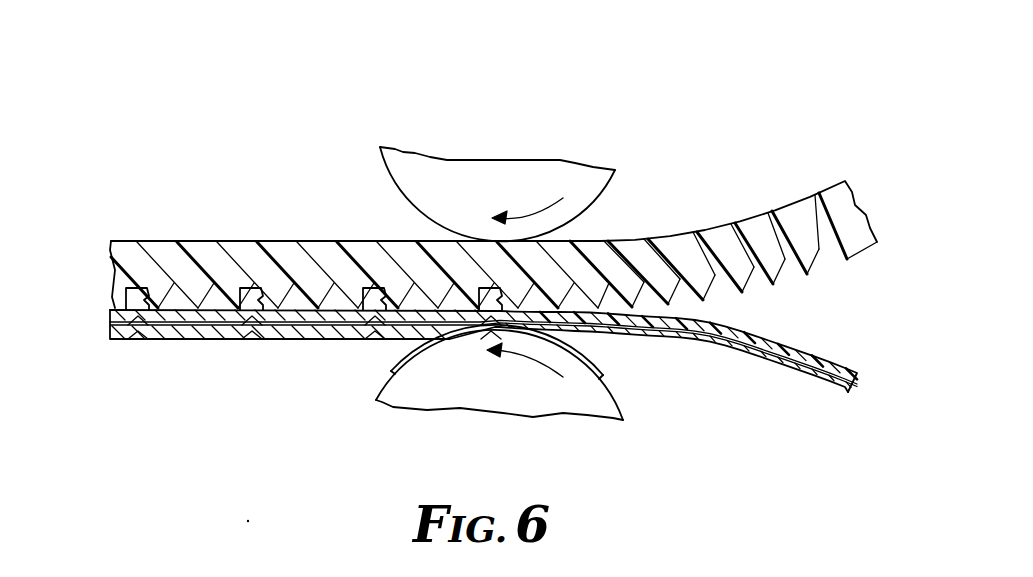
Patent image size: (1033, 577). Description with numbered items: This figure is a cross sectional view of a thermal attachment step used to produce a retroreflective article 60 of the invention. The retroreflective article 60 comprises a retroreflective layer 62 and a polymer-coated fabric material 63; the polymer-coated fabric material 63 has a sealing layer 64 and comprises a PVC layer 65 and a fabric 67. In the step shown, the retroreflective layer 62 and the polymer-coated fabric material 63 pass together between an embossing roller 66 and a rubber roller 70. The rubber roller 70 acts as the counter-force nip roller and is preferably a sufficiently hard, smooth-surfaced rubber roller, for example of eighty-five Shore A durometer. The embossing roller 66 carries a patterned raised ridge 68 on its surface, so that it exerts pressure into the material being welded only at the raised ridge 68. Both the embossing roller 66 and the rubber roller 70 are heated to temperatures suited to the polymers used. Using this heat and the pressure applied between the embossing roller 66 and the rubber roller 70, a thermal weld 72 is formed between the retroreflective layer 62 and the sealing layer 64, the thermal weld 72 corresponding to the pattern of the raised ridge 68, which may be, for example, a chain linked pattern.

The retroreflective article 60 is at (248, 236).
The retroreflective layer 62 is at (807, 199).
The polymer-coated fabric material 63 is at (104, 306).
The sealing layer 64 is at (827, 361).
The PVC layer 65 is at (797, 367).
The embossing roller 66 is at (628, 400).
The fabric 67 is at (203, 326).
The patterned raised ridge 68 is at (607, 366).
The rubber roller 70 is at (512, 166).
The thermal weld 72 is at (339, 243).